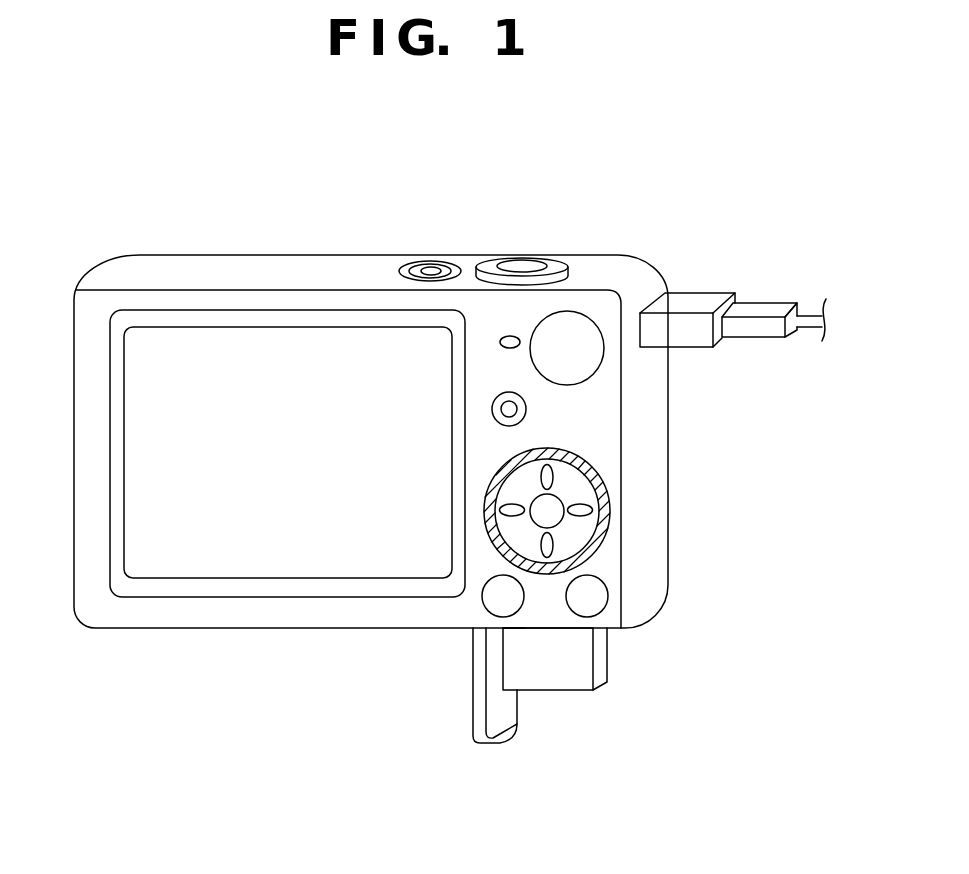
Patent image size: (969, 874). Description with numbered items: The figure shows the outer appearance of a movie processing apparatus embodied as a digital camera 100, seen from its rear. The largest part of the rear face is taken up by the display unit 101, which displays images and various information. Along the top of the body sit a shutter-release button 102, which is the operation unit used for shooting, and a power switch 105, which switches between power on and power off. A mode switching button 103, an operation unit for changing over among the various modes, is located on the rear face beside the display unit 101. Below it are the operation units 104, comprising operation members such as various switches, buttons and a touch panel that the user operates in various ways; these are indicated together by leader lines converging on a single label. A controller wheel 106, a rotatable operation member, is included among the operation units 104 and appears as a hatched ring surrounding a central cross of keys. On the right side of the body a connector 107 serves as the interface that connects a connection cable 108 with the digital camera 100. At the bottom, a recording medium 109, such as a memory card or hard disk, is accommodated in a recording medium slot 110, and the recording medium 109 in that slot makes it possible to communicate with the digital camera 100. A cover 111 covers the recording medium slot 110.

The digital camera 100 is at (164, 665).
The display unit 101 is at (177, 342).
The shutter-release button 102 is at (519, 262).
The mode switching button 103 is at (547, 335).
The operation units 104 is at (563, 282).
The power switch 105 is at (430, 265).
The controller wheel 106 is at (485, 525).
The connector 107 is at (688, 302).
The connection cable 108 is at (765, 312).
The recording medium 109 is at (557, 684).
The recording medium slot 110 is at (522, 630).
The cover 111 is at (498, 747).